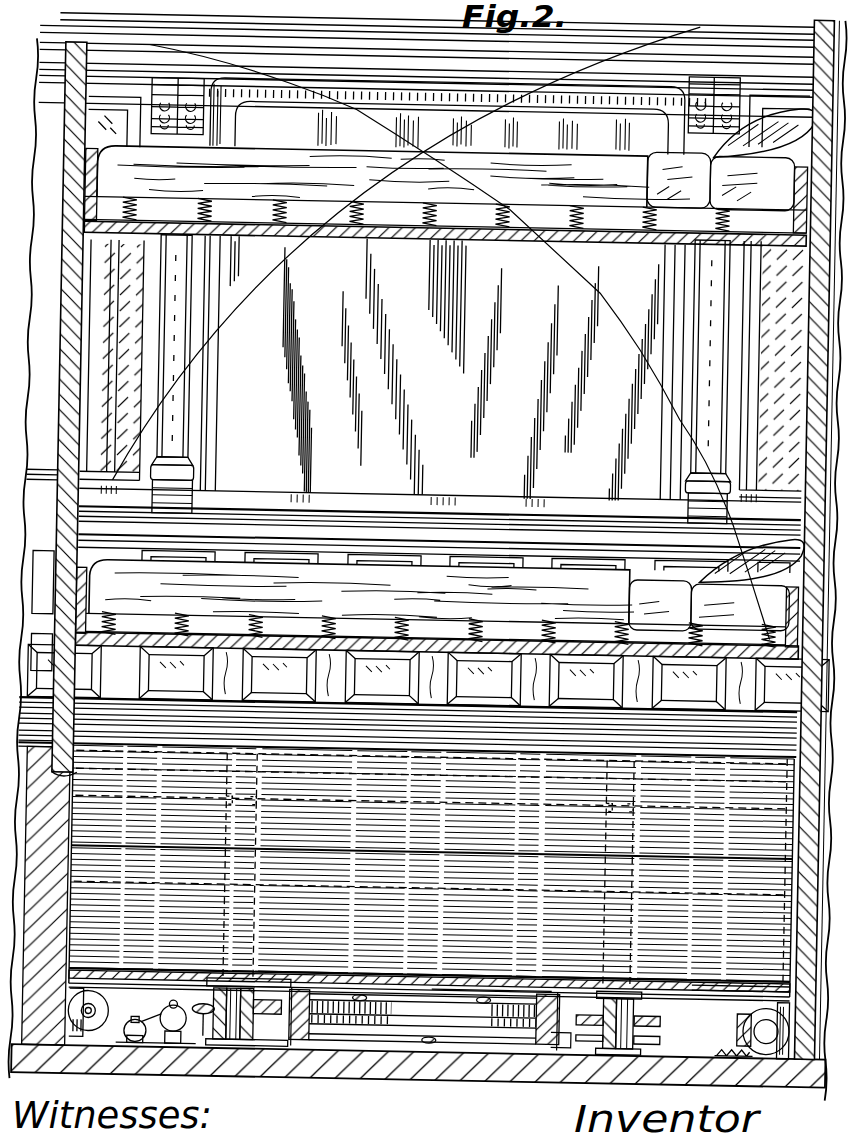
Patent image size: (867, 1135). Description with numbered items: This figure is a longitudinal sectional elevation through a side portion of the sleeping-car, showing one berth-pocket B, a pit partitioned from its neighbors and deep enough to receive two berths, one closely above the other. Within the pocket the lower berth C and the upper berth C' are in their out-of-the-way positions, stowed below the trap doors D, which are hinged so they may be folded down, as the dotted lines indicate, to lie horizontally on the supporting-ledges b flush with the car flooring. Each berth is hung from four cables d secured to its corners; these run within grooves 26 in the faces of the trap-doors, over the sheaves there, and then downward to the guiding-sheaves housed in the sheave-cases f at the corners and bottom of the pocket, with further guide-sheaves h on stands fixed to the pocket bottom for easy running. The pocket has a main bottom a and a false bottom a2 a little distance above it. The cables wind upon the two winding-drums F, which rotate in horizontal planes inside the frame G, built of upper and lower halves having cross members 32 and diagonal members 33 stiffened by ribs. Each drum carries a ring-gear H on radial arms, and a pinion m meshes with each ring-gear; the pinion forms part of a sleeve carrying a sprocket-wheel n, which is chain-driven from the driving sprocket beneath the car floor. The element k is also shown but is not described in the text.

The berth C' is at (450, 179).
The berth C is at (439, 605).
The trap door D is at (806, 455).
The grooves 26 is at (78, 451).
The berth-pocket B is at (431, 871).
The supporting-ledges b is at (82, 800).
The sheave-cases f is at (108, 993).
The guide-sheaves h is at (143, 1024).
The pinion m is at (182, 1008).
The frame G is at (320, 975).
The ring-gears H is at (300, 982).
The cross members 32 is at (258, 986).
The main bottom a is at (447, 1032).
The diagonal members 33 is at (449, 989).
The false bottom a2 is at (713, 978).
The sprocket-wheel n is at (650, 1018).
The cables d is at (126, 1032).
The winding-drums F is at (319, 1001).
The lever k is at (576, 1045).